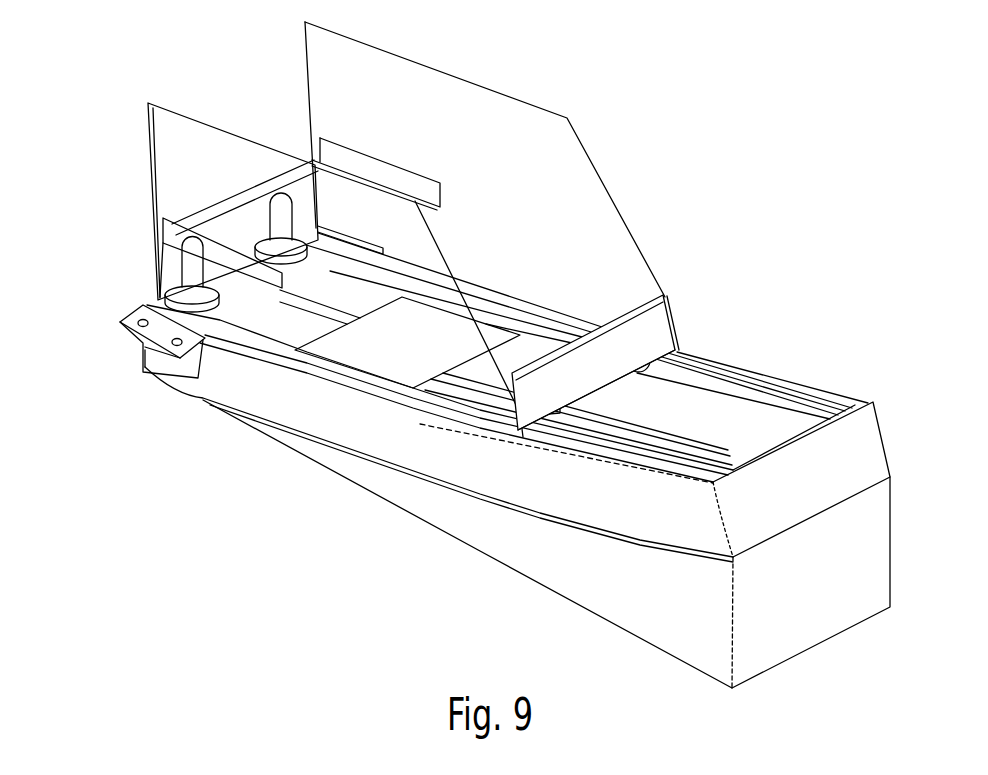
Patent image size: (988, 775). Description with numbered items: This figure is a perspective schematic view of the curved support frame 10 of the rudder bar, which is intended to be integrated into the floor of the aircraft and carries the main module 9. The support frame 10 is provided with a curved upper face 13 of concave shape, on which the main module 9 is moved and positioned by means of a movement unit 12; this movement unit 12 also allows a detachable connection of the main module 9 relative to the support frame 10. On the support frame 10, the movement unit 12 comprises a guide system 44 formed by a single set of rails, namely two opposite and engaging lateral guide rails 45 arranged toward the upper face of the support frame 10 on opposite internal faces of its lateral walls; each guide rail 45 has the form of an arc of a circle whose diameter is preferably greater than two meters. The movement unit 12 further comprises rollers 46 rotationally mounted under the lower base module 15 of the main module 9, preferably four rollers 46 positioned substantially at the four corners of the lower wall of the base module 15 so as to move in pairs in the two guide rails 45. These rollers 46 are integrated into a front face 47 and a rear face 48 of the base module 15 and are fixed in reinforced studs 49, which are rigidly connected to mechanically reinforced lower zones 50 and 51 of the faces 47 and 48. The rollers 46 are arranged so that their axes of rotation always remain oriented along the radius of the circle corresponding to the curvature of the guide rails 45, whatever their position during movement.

The main module 9 is at (147, 140).
The support frame 10 is at (892, 393).
The movement unit 12 is at (629, 284).
The curved upper face 13 is at (753, 393).
The base module 15 is at (607, 177).
The guide system 44 is at (211, 320).
The lateral guide rails 45 is at (322, 257).
The rollers 46 is at (120, 322).
The front face 47 is at (157, 245).
The rear face 48 is at (668, 302).
The reinforced studs 49 is at (175, 265).
The mechanically reinforced lower zone 50 is at (157, 257).
The mechanically reinforced lower zone 51 is at (662, 325).